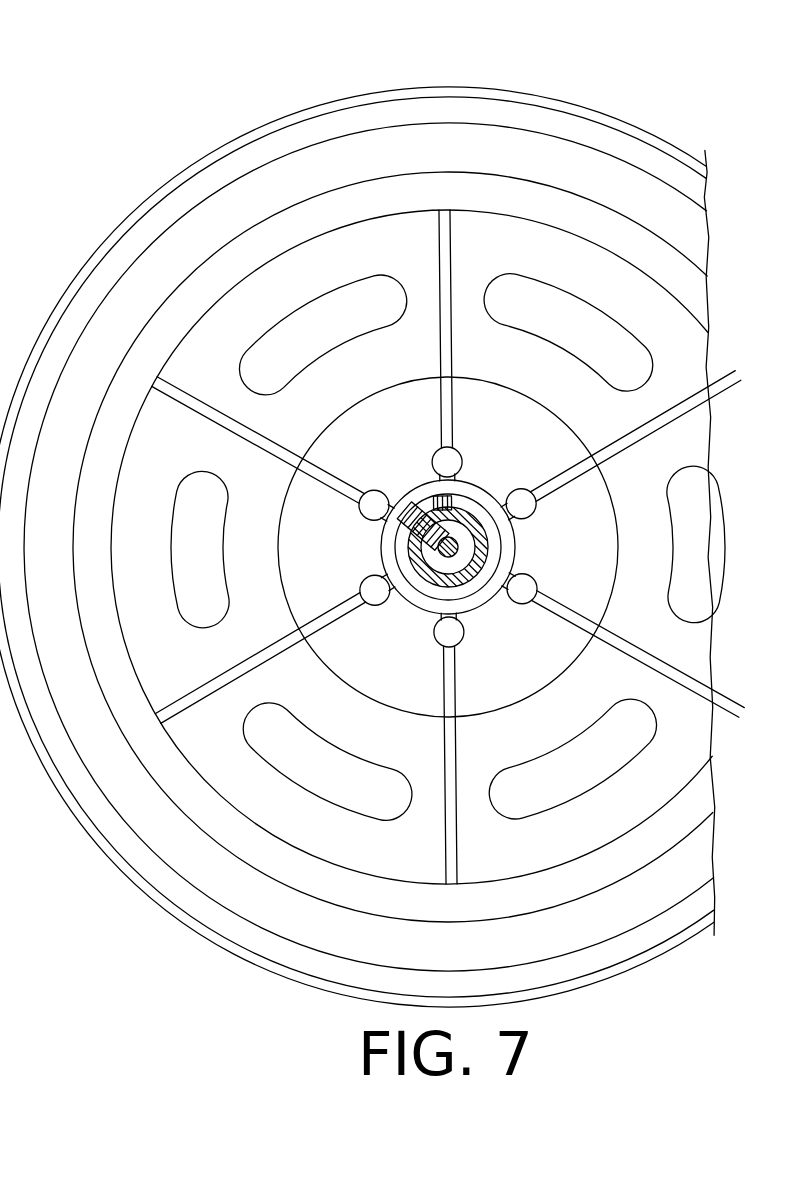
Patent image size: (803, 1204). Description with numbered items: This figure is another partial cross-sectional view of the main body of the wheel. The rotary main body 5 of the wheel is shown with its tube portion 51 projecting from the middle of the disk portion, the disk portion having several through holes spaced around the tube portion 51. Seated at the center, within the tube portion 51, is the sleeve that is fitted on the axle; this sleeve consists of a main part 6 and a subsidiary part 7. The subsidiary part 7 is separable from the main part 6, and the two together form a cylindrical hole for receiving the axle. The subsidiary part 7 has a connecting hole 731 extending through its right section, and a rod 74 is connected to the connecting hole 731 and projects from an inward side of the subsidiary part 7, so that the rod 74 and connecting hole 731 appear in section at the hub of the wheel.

The rotary main body 5 is at (352, 97).
The tube portion 51 is at (483, 493).
The main part of the sleeve 6 is at (478, 578).
The subsidiary part of the sleeve 7 is at (408, 543).
The connecting hole 731 is at (432, 498).
The rod 74 is at (401, 528).